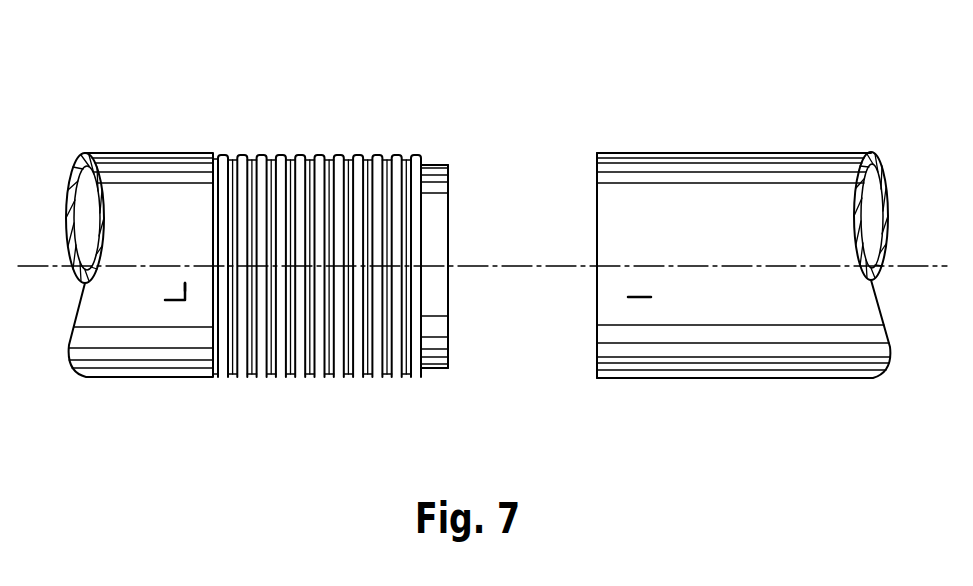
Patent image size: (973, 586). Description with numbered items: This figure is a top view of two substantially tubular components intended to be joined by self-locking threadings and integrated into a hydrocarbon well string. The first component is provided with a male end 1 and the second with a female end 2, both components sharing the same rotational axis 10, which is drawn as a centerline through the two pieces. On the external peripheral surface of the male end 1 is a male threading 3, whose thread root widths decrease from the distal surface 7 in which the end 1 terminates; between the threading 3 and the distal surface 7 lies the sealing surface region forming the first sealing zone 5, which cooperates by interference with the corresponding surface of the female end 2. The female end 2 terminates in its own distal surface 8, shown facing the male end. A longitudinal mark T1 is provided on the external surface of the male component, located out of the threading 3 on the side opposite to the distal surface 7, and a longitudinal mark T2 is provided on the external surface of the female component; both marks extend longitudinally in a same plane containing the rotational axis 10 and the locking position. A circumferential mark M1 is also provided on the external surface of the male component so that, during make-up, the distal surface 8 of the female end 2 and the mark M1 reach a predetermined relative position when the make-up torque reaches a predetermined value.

The male end 1 is at (157, 134).
The female end 2 is at (790, 132).
The male threading 3 is at (276, 134).
The first sealing zone 5 is at (434, 138).
The distal surface 7 is at (449, 214).
The distal surface 8 is at (597, 167).
The rotational axis 10 is at (900, 267).
The longitudinal mark T1 is at (180, 300).
The circumferential mark M1 is at (188, 285).
The longitudinal mark T2 is at (628, 297).